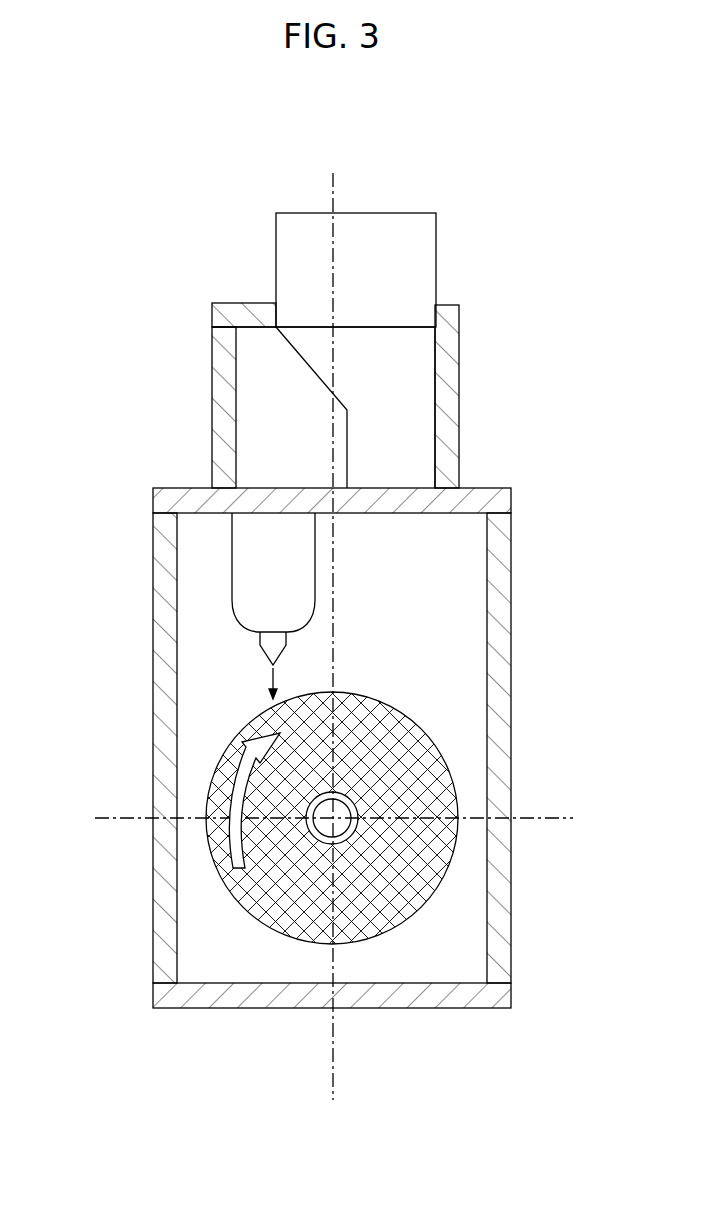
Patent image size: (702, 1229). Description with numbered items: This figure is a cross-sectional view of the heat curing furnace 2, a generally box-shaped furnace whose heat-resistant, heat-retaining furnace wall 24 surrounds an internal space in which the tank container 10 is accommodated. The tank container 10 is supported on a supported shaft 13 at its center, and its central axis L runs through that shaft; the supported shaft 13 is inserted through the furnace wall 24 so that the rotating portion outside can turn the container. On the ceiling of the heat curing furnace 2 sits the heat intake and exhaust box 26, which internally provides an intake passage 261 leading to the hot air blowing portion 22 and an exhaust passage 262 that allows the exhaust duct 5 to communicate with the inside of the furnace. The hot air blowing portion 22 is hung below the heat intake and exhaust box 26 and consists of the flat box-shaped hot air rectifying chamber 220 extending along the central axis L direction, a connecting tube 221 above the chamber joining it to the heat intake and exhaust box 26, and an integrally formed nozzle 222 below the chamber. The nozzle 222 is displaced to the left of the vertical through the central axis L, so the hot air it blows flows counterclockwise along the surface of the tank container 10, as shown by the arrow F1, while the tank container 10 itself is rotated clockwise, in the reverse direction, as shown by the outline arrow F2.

The heat curing furnace 2 is at (330, 395).
The exhaust duct 5 is at (436, 250).
The tank container 10 is at (240, 912).
The supported shaft 13 is at (297, 878).
The hot air blowing portion 22 is at (309, 725).
The furnace wall 24 is at (160, 740).
The heat intake and exhaust box 26 is at (210, 340).
The hot air rectifying chamber 220 is at (257, 560).
The connecting tube 221 is at (267, 487).
The nozzle 222 is at (183, 635).
The intake passage 261 is at (265, 375).
The exhaust passage 262 is at (400, 365).
The central axis L is at (355, 822).
The arrow F1 is at (270, 683).
The outline arrow F2 is at (269, 791).